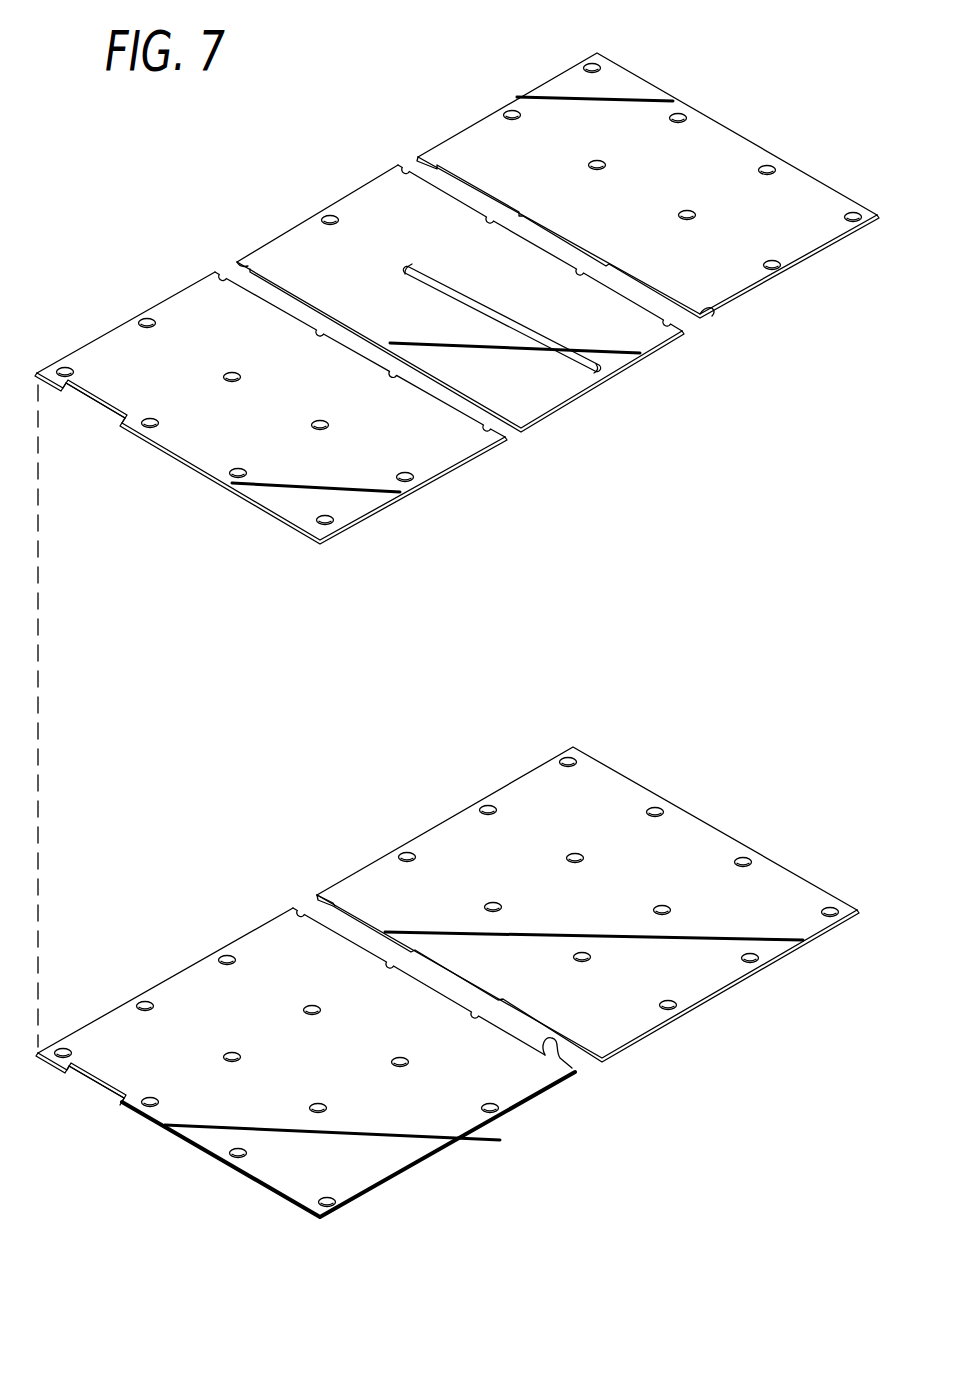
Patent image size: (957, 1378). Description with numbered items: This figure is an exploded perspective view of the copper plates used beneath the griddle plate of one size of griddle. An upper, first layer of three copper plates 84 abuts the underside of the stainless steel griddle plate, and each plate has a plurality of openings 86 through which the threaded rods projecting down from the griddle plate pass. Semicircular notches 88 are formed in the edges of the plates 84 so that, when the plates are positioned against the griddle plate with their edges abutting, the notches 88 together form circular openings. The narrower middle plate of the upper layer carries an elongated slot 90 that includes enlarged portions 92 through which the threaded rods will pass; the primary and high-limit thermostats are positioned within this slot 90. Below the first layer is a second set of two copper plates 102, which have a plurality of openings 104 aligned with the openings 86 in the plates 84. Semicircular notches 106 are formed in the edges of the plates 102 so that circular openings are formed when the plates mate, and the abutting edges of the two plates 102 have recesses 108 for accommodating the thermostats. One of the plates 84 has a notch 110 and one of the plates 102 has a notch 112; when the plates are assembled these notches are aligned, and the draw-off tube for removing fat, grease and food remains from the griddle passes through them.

The copper plates 84 is at (230, 342).
The openings 86 is at (331, 214).
The semicircular notches 88 is at (241, 261).
The elongated slot 90 is at (478, 297).
The enlarged portions 92 is at (420, 267).
The second set of copper plates 102 is at (315, 994).
The openings 104 is at (488, 805).
The semicircular notches 106 is at (332, 897).
The recesses 108 is at (577, 1050).
The notch 110 is at (103, 410).
The notch 112 is at (107, 1088).